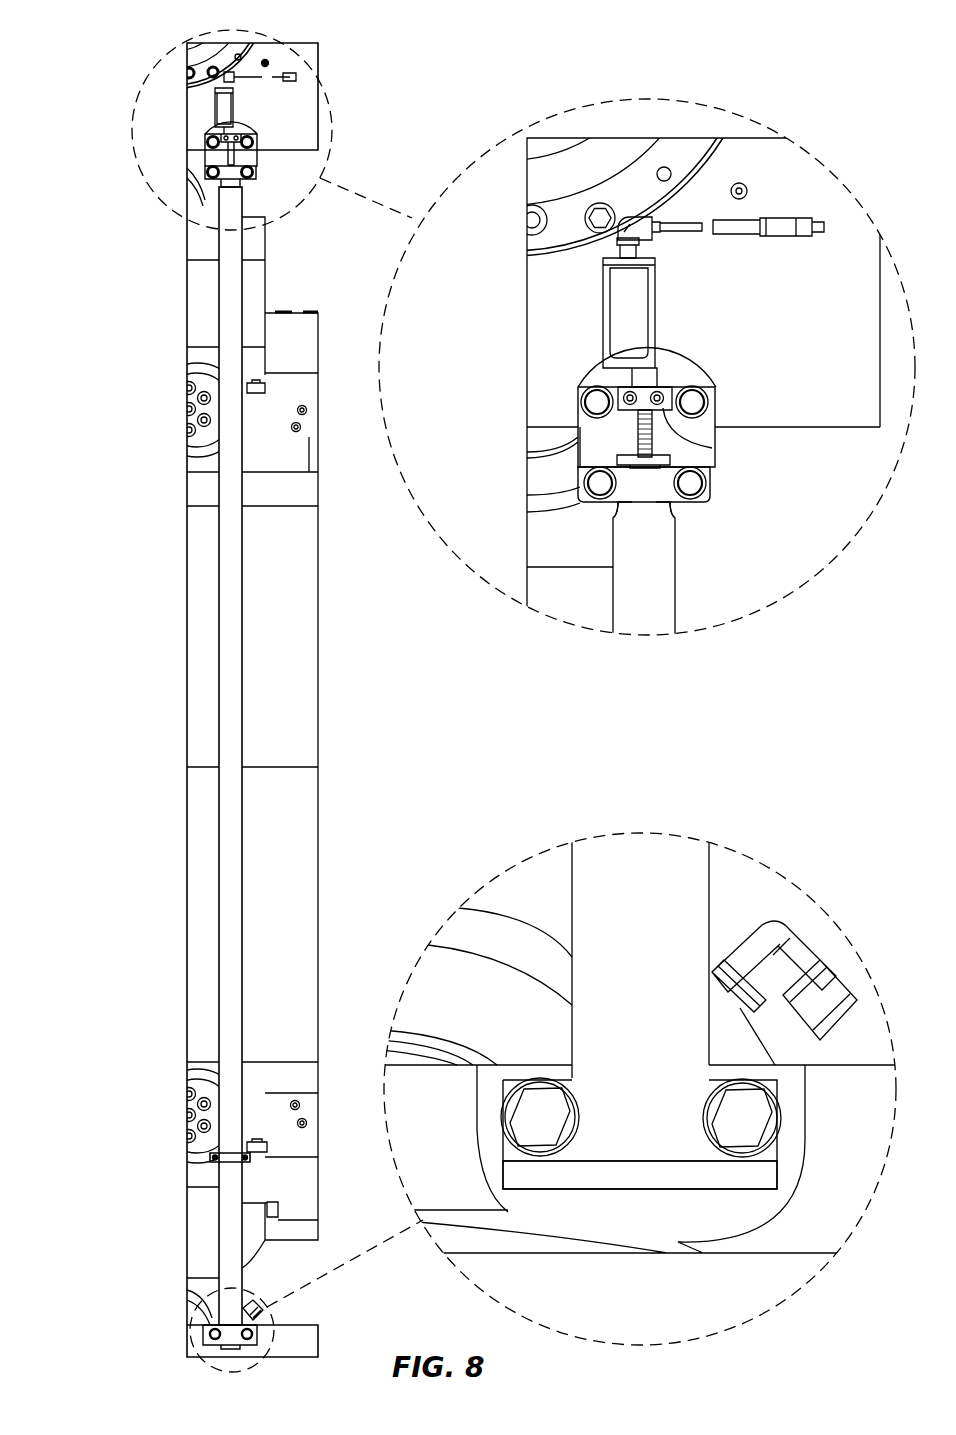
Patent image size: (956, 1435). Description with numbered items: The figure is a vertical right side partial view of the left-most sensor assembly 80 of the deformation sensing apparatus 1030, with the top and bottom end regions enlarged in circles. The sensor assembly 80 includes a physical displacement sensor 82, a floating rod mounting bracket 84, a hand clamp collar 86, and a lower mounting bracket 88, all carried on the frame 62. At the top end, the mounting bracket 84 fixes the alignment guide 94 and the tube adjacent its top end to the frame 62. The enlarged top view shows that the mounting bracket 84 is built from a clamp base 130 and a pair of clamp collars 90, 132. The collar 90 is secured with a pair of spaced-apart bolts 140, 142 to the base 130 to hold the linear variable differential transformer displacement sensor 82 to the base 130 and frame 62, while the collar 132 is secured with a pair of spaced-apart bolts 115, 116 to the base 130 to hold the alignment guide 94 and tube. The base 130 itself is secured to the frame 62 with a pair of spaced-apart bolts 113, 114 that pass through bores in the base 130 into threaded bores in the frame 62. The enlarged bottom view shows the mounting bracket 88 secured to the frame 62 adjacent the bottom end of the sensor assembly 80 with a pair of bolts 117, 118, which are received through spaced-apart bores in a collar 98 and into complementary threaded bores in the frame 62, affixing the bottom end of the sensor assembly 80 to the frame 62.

The deformation sensing apparatus 1030 is at (97, 288).
The frame 62 is at (300, 43).
The sensor assembly 80 is at (219, 645).
The physical displacement sensor 82 is at (253, 108).
The floating rod mounting bracket 84 is at (213, 189).
The hand clamp collar 86 is at (224, 1164).
The mounting bracket 88 is at (226, 1347).
The clamp collar 90 is at (668, 416).
The alignment guide 94 is at (613, 506).
The collar 98 is at (628, 1145).
The bolt 113 is at (595, 402).
The bolt 114 is at (695, 402).
The bolt 115 is at (598, 483).
The bolt 116 is at (692, 488).
The bolt 117 is at (540, 1115).
The bolt 118 is at (748, 1118).
The clamp base 130 is at (692, 372).
The clamp collar 132 is at (675, 505).
The bolt 140 is at (627, 397).
The bolt 142 is at (659, 395).